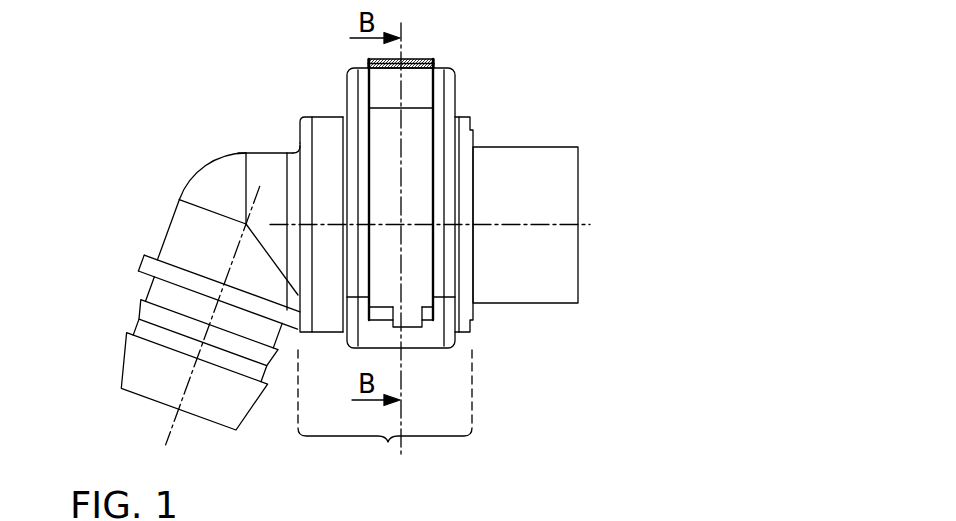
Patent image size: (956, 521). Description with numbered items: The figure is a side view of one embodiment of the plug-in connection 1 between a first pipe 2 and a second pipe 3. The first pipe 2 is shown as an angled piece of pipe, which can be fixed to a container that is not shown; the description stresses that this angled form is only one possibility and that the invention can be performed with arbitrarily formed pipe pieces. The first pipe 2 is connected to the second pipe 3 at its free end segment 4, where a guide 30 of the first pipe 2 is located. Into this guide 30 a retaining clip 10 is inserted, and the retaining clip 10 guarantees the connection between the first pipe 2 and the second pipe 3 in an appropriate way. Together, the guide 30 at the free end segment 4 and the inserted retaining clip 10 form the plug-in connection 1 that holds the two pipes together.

The plug-in connection 1 is at (466, 69).
The first pipe 2 is at (200, 159).
The second pipe 3 is at (567, 143).
The free end segment 4 is at (428, 436).
The retaining clip 10 is at (415, 253).
The guide 30 is at (355, 90).